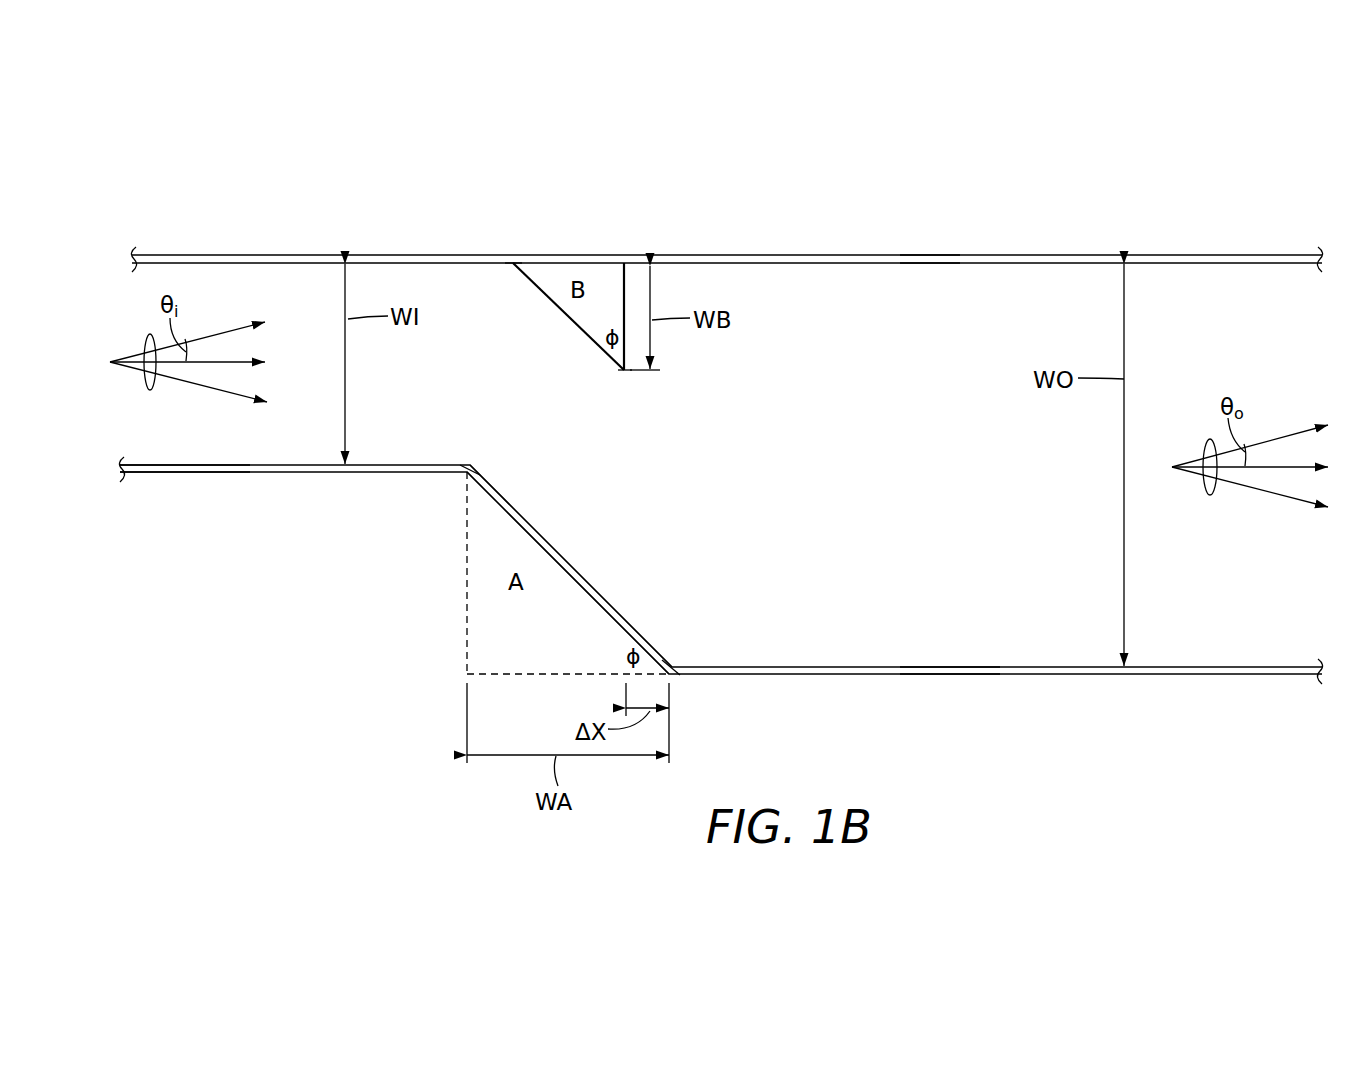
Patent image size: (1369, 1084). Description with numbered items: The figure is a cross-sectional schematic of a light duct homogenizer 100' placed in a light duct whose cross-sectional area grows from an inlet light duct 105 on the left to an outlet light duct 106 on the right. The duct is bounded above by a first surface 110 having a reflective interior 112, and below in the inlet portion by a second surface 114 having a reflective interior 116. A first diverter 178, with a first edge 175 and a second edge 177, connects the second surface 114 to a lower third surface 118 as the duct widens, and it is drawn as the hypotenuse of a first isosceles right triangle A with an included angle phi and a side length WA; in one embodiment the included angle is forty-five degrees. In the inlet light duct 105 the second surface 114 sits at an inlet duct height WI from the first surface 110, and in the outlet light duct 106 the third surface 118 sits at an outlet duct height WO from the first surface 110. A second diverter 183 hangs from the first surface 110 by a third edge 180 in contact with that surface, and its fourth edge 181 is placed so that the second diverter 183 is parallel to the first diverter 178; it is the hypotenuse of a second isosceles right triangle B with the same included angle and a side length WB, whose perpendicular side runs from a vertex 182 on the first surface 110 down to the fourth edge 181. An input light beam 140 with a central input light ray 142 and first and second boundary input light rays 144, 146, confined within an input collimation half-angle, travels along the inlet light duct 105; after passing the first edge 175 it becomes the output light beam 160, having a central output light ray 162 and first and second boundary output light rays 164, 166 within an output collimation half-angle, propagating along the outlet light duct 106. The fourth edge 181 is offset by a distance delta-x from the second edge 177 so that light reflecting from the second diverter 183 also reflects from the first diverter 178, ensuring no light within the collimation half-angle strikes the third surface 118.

The light duct homogenizer 100' is at (253, 105).
The inlet light duct 105 is at (181, 238).
The outlet light duct 106 is at (1196, 237).
The first surface 110 is at (270, 253).
The reflective interior 112 is at (916, 264).
The second surface 114 is at (174, 473).
The reflective interior 116 is at (233, 462).
The third surface 118 is at (963, 676).
The input light beam 140 is at (144, 340).
The central input light ray 142 is at (235, 360).
The first boundary input light ray 144 is at (217, 332).
The second boundary input light ray 146 is at (190, 385).
The output light beam 160 is at (1205, 448).
The central output light ray 162 is at (1293, 462).
The first boundary output light ray 164 is at (1278, 440).
The second boundary output light ray 166 is at (1252, 492).
The first edge 175 is at (468, 470).
The second edge 177 is at (673, 675).
The first diverter 178 is at (588, 595).
The third edge 180 is at (515, 262).
The fourth edge 181 is at (624, 372).
The vertex 182 is at (625, 262).
The second diverter 183 is at (565, 318).